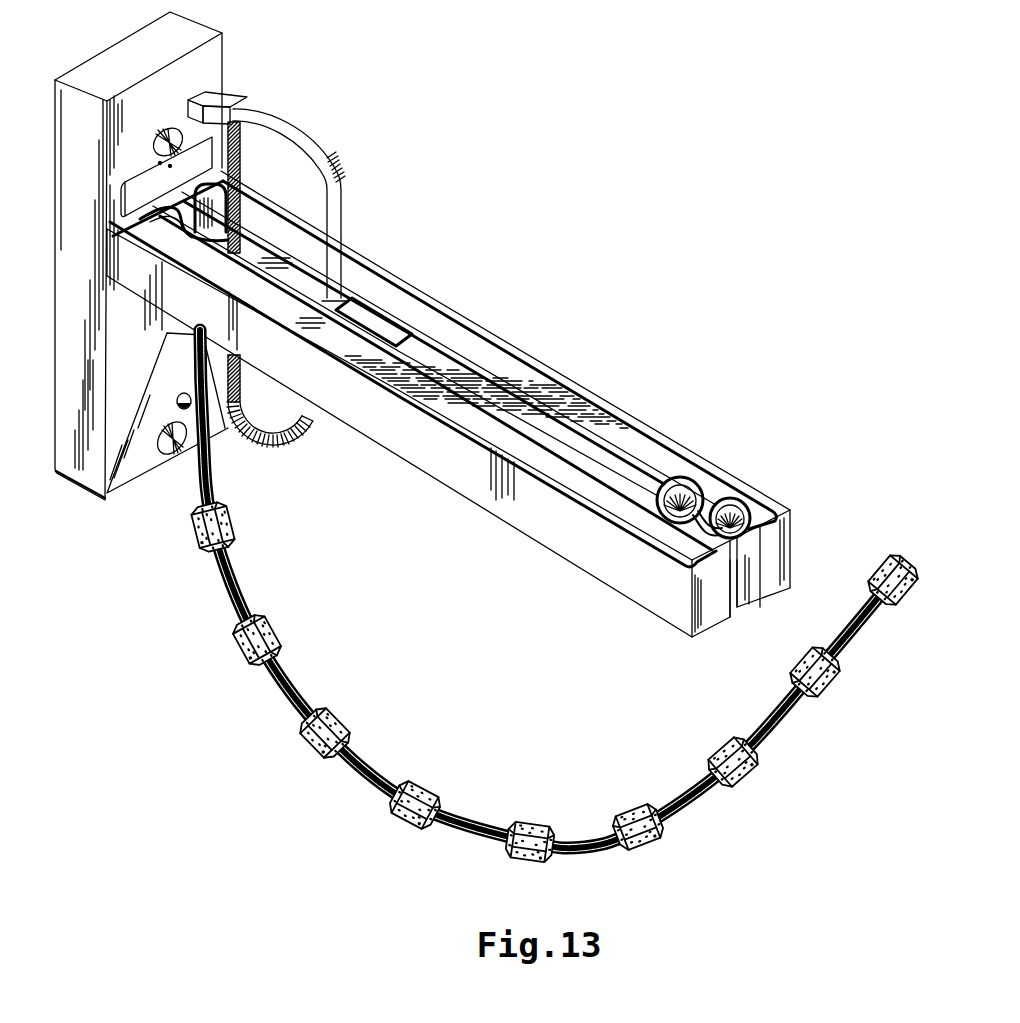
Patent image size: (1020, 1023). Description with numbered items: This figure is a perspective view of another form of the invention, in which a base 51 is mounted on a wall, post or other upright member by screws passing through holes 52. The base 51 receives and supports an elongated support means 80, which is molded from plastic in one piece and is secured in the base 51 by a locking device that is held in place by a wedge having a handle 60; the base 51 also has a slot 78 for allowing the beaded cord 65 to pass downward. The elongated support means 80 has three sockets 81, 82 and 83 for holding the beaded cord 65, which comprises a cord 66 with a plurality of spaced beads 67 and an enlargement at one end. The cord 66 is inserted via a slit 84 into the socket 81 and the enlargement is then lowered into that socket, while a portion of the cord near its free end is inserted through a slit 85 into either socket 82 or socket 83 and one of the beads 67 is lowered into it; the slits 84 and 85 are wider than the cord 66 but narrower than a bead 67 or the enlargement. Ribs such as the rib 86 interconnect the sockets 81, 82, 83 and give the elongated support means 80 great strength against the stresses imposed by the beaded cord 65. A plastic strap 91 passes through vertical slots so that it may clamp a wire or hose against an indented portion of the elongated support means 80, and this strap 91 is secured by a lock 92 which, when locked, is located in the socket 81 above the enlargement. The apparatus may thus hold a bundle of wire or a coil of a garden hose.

The base 51 is at (240, 42).
The holes 52 is at (178, 131).
The handle 60 is at (152, 182).
The beaded cord 65 is at (556, 596).
The cord 66 is at (462, 815).
The beads 67 is at (347, 722).
The slot 78 is at (178, 396).
The elongated support means 80 is at (531, 343).
The socket 81 is at (202, 234).
The socket 82 is at (696, 486).
The socket 83 is at (752, 498).
The slit 84 is at (167, 223).
The slit 85 is at (740, 605).
The rib 86 is at (597, 462).
The plastic strap 91 is at (342, 208).
The lock 92 is at (245, 98).